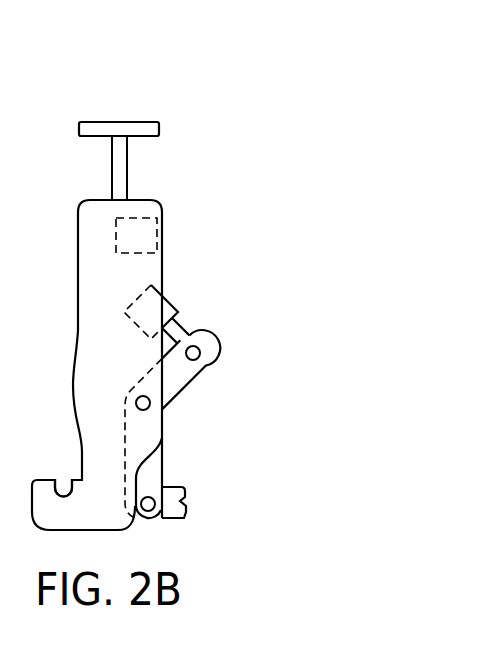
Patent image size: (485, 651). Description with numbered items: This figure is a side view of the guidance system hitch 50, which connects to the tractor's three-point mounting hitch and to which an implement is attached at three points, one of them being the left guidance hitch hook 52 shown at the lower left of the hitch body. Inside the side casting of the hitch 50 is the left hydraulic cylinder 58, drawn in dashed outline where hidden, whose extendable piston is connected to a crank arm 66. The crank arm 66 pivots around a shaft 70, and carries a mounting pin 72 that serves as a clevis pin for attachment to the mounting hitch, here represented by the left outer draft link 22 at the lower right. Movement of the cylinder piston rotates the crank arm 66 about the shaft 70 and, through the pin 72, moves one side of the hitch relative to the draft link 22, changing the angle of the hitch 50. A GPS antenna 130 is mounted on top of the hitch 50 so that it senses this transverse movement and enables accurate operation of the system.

The GPS antenna 130 is at (143, 122).
The guidance system hitch 50 is at (60, 272).
The left guidance hitch hook 52 is at (62, 492).
The left hydraulic cylinder 58 is at (165, 310).
The crank arm 66 is at (171, 378).
The shaft 70 is at (147, 408).
The mounting pin 72 is at (148, 511).
The left outer draft link 22 is at (178, 488).